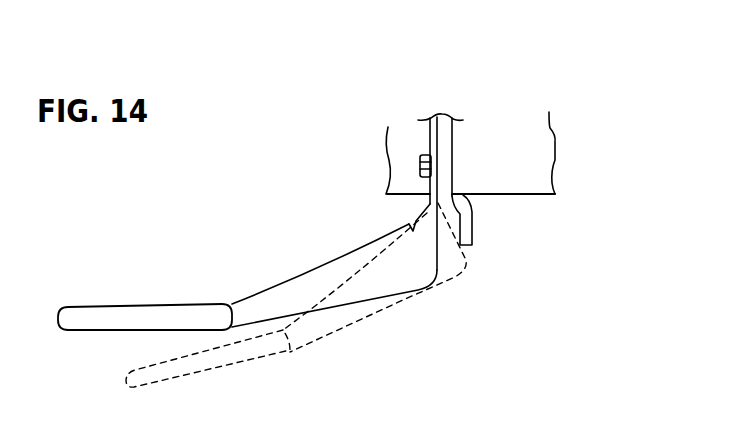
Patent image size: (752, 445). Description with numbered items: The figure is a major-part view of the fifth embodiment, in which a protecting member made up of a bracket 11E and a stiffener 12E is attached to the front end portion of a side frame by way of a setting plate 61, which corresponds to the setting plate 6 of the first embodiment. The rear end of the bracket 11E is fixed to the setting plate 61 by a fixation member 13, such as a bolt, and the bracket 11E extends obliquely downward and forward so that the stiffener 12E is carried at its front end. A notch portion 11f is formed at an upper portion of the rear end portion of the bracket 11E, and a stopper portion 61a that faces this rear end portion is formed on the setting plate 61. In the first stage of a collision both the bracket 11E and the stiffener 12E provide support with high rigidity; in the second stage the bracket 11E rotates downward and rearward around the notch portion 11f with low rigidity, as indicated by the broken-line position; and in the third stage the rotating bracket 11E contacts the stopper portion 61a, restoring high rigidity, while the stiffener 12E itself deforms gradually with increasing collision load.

The setting plate 6 is at (537, 153).
The setting plate 61 is at (445, 148).
The stopper portion 61a is at (465, 225).
The fixation member 13 is at (420, 165).
The bracket 11E is at (291, 283).
The notch portion 11f is at (410, 221).
The stiffener 12E is at (105, 312).